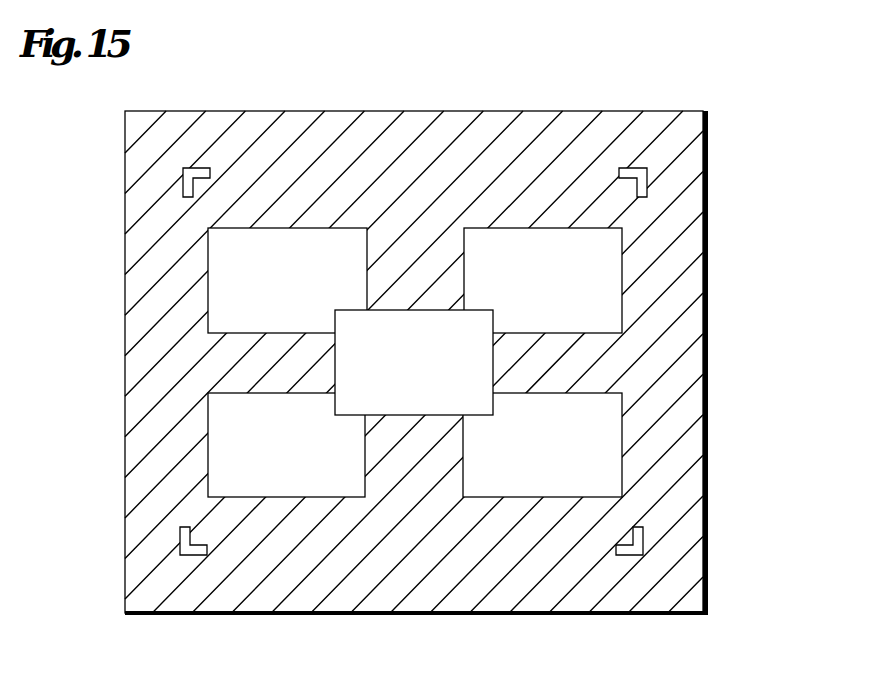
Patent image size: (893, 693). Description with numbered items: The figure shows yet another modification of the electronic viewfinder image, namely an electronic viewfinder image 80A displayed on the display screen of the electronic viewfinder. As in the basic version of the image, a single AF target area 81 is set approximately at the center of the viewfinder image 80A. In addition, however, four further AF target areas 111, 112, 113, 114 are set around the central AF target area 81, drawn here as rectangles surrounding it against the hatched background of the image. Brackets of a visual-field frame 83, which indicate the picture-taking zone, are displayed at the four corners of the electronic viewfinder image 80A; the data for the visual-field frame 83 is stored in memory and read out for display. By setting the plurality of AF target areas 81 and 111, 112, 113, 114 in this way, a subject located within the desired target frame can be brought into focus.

The electronic viewfinder image 80A is at (705, 252).
The AF target area 81 is at (497, 384).
The visual-field frame 83 is at (198, 167).
The AF target area 111 is at (208, 299).
The AF target area 112 is at (622, 309).
The AF target area 113 is at (208, 474).
The AF target area 114 is at (622, 481).